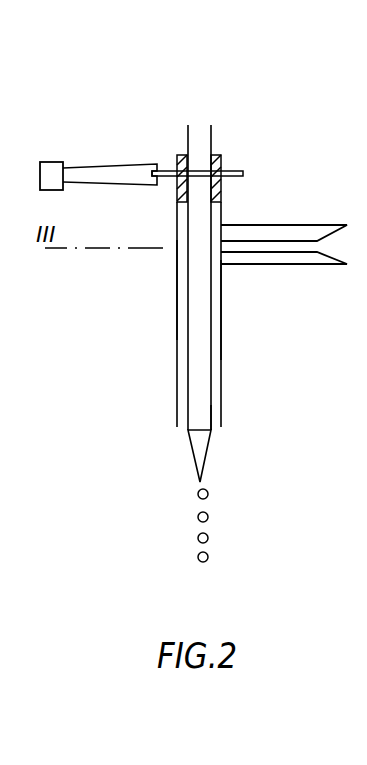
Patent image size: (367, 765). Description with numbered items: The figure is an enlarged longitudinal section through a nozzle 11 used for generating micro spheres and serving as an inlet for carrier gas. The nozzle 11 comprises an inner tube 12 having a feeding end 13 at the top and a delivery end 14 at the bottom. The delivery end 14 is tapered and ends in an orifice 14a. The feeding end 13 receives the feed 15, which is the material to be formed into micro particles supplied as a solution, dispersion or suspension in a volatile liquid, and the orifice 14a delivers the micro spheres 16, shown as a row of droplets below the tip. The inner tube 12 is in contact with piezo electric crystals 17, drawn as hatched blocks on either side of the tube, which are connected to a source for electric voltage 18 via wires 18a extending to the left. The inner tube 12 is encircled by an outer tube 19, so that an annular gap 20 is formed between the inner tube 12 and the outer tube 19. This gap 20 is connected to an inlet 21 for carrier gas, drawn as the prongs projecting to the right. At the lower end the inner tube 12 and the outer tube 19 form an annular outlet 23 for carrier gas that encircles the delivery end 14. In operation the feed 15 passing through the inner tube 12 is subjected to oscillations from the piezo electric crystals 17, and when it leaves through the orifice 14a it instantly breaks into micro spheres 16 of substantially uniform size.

The nozzle 11 is at (238, 382).
The inner tube 12 is at (187, 358).
The feeding end 13 is at (207, 122).
The delivery end 14 is at (197, 462).
The orifice 14a is at (206, 483).
The feed 15 is at (202, 97).
The micro spheres 16 is at (217, 533).
The piezo electric crystals 17 is at (222, 160).
The source for electric voltage 18 is at (55, 162).
The wires 18a is at (128, 164).
The outer tube 19 is at (177, 303).
The annular gap 20 is at (221, 328).
The inlet for carrier gas 21 is at (290, 223).
The annular outlet 23 is at (213, 432).